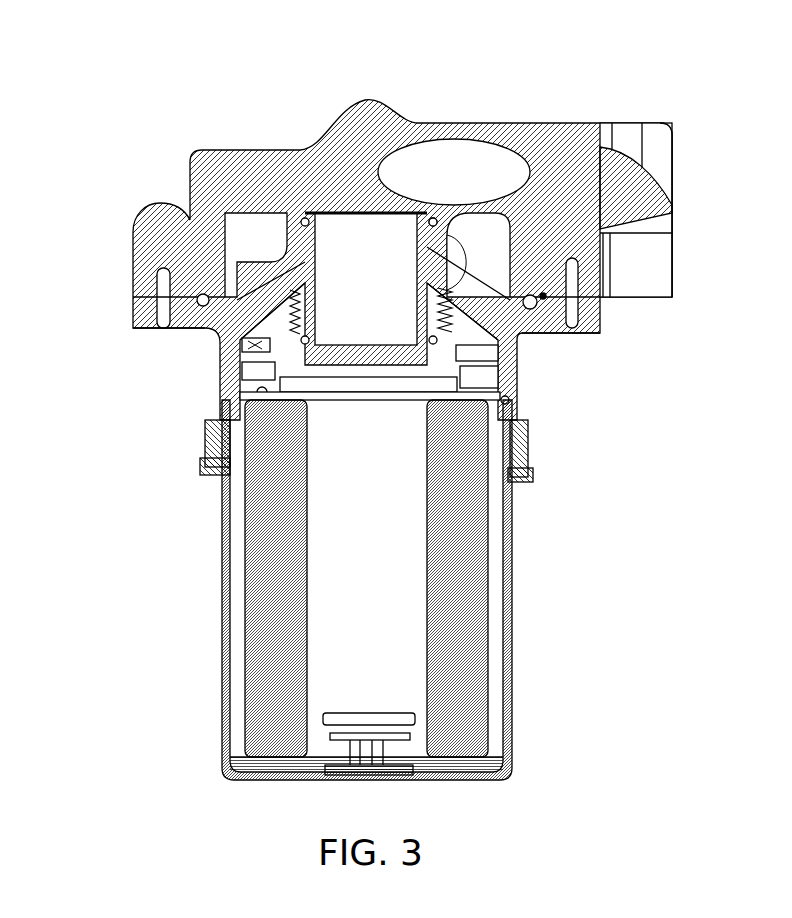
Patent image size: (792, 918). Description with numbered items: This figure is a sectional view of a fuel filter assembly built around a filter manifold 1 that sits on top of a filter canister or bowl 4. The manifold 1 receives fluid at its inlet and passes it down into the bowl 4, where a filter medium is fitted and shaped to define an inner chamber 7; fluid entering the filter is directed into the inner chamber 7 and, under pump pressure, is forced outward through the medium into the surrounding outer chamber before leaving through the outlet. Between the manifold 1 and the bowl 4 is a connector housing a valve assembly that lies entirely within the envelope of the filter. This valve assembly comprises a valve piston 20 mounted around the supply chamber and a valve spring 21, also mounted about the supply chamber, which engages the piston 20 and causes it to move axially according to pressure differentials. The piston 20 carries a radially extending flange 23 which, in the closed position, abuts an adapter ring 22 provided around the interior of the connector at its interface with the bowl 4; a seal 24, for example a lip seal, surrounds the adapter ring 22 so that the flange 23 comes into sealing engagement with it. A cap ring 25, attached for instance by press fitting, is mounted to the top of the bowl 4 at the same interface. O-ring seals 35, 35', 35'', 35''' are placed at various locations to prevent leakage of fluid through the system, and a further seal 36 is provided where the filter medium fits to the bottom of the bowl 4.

The filter manifold 1 is at (258, 200).
The filter canister or bowl 4 is at (228, 598).
The inner chamber 7 is at (290, 660).
The valve piston 20 is at (580, 322).
The valve spring 21 is at (490, 272).
The adapter ring 22 is at (240, 378).
The radially extending flange 23 is at (135, 298).
The seal 24 is at (240, 345).
The cap ring 25 is at (210, 422).
The O-ring seal 35 is at (481, 315).
The O-ring seal 35' is at (566, 451).
The O-ring seal 35'' is at (654, 278).
The O-ring seal 35''' is at (592, 185).
The seal 36 is at (425, 738).